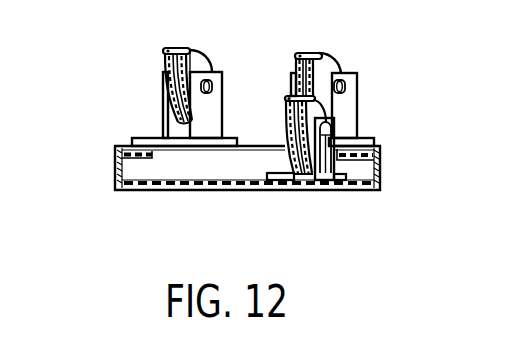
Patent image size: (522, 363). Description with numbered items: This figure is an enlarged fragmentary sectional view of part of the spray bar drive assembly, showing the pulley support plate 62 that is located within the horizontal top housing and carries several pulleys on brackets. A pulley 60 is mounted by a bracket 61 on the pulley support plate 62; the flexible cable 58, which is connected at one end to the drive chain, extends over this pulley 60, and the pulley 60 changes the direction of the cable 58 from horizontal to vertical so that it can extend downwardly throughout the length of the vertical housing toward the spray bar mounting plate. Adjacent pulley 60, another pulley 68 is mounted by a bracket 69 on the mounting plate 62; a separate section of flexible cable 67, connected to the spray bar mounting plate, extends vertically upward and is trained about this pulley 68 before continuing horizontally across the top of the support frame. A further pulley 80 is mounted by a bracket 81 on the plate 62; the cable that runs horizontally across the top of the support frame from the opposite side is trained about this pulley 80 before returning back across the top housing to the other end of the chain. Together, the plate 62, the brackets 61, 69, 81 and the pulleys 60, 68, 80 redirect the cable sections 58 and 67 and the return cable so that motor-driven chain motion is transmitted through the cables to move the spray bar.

The flexible cable 58 is at (307, 53).
The pulley 60 is at (328, 62).
The bracket 61 is at (346, 110).
The pulley support plate 62 is at (116, 146).
The section of flexible cable 67 is at (168, 50).
The pulley 68 is at (200, 55).
The bracket 69 is at (210, 107).
The pulley 80 is at (277, 182).
The bracket 81 is at (325, 168).